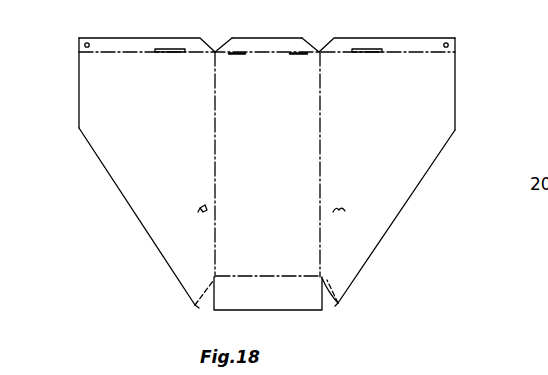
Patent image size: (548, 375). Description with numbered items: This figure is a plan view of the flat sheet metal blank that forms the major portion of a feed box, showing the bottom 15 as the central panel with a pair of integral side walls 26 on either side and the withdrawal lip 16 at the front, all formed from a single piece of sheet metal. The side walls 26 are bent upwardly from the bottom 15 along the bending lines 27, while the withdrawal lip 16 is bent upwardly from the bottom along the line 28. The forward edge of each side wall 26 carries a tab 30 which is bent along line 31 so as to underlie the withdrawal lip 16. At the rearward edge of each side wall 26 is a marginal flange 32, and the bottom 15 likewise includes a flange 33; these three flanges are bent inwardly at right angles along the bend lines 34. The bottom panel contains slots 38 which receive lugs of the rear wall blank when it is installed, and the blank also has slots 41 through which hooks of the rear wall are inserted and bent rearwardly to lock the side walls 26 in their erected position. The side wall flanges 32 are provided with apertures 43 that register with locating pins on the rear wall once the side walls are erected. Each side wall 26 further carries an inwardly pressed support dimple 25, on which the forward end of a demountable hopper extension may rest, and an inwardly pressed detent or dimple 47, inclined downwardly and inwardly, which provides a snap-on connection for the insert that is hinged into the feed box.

The bottom 15 is at (266, 68).
The withdrawal lip 16 is at (235, 298).
The support dimples 25 is at (143, 186).
The side walls 26 is at (107, 142).
The bending lines 27 is at (213, 110).
The bend line 28 is at (271, 274).
The tab 30 is at (196, 306).
The bend line 31 is at (208, 283).
The marginal flange 32 is at (122, 41).
The flange 33 is at (283, 45).
The bend lines 34 is at (107, 55).
The slots 38 is at (237, 55).
The slots 41 is at (170, 49).
The apertures 43 is at (85, 46).
The detents or dimples 47 is at (198, 212).